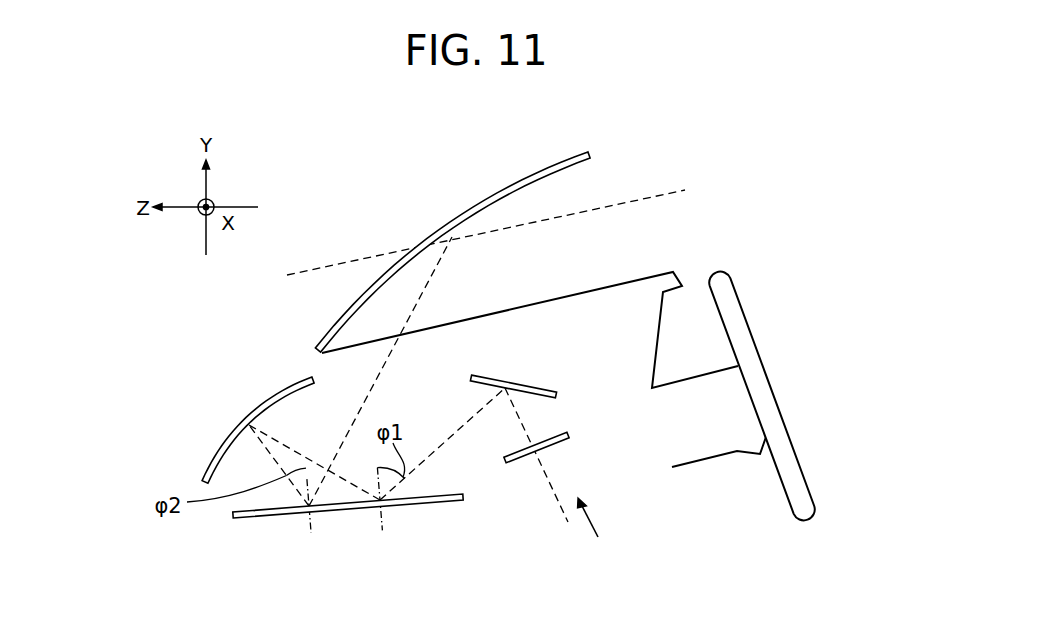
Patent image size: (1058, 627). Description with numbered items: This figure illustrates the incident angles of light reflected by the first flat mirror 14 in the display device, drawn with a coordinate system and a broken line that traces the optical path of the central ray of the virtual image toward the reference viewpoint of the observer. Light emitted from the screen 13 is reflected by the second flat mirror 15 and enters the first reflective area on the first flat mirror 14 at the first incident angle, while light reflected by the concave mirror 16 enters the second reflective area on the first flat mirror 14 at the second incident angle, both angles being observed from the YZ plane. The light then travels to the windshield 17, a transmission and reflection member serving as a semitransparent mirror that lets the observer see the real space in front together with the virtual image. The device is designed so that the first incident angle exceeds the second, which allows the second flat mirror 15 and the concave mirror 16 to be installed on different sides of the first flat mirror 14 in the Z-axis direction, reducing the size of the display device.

The screen 13 is at (564, 433).
The first flat mirror 14 is at (268, 517).
The second flat mirror 15 is at (511, 381).
The concave mirror 16 is at (248, 410).
The windshield 17 is at (526, 179).